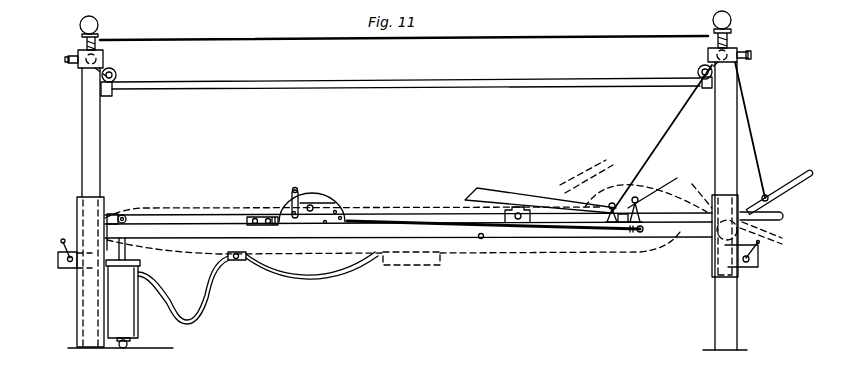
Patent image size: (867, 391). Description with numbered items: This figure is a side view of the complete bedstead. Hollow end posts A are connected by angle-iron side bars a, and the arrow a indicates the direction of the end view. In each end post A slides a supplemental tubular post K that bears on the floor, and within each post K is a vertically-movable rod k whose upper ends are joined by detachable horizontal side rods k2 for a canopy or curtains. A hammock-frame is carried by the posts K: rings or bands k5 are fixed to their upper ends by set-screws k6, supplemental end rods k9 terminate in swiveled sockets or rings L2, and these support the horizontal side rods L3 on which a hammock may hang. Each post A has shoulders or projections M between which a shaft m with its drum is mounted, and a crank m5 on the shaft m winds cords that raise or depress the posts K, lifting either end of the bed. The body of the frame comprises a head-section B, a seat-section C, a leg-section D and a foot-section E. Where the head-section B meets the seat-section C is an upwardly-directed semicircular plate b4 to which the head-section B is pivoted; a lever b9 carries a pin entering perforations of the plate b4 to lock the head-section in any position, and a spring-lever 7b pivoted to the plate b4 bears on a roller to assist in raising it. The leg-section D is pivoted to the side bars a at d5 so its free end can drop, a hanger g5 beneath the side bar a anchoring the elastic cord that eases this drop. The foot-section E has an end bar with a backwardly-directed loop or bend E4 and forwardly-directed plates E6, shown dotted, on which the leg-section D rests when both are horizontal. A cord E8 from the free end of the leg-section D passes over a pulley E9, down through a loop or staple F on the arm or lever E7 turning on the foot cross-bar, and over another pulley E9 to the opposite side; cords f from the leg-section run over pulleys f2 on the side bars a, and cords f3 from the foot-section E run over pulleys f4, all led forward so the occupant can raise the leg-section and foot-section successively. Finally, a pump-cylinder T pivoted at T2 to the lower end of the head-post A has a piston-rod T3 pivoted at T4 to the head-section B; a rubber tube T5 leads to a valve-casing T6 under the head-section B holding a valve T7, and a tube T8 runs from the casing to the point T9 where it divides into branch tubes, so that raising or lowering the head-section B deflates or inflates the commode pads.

The supplemental tubular post K is at (99, 152).
The end post A is at (716, 318).
The vertically-movable rod k is at (104, 50).
The set-screw k6 is at (68, 60).
The ring or band k5 is at (84, 70).
The supplemental end rod k9 is at (118, 76).
The swiveled socket or ring L2 is at (112, 94).
The horizontal side rod k2 is at (561, 39).
The horizontal side rod L3 is at (528, 87).
The pulley E9 is at (729, 53).
The head-section B is at (172, 221).
The pivotal connection of piston-rod T4 is at (124, 214).
The crank m5 is at (40, 229).
The shaft m is at (58, 262).
The shoulders or projections M is at (70, 272).
The pump-cylinder T is at (118, 318).
The pivotal connection of pump-cylinder T2 is at (130, 348).
The piston-rod T3 is at (140, 258).
The valve T7 is at (240, 262).
The rubber tube T5 is at (198, 316).
The valve-casing T6 is at (236, 262).
The tube T8 is at (320, 276).
The tube division point T9 is at (385, 258).
The semicircular plate b4 is at (318, 192).
The lever b9 is at (292, 193).
The spring-lever 7b is at (318, 207).
The seat-section C is at (390, 220).
The pulley f2 is at (610, 215).
The cord f is at (466, 199).
The cord f3 is at (514, 207).
The pulley f4 is at (638, 202).
The leg-section D is at (548, 218).
The forwardly-directed plate E6 is at (608, 183).
The foot-section E is at (656, 218).
The cord E8 is at (667, 131).
The loop or staple F is at (763, 198).
The arm or lever E7 is at (795, 182).
The backwardly-directed loop or bend E4 is at (783, 216).
The pivotal support of leg-section d5 is at (522, 222).
The hanger g5 is at (482, 238).
The side bar a is at (452, 240).